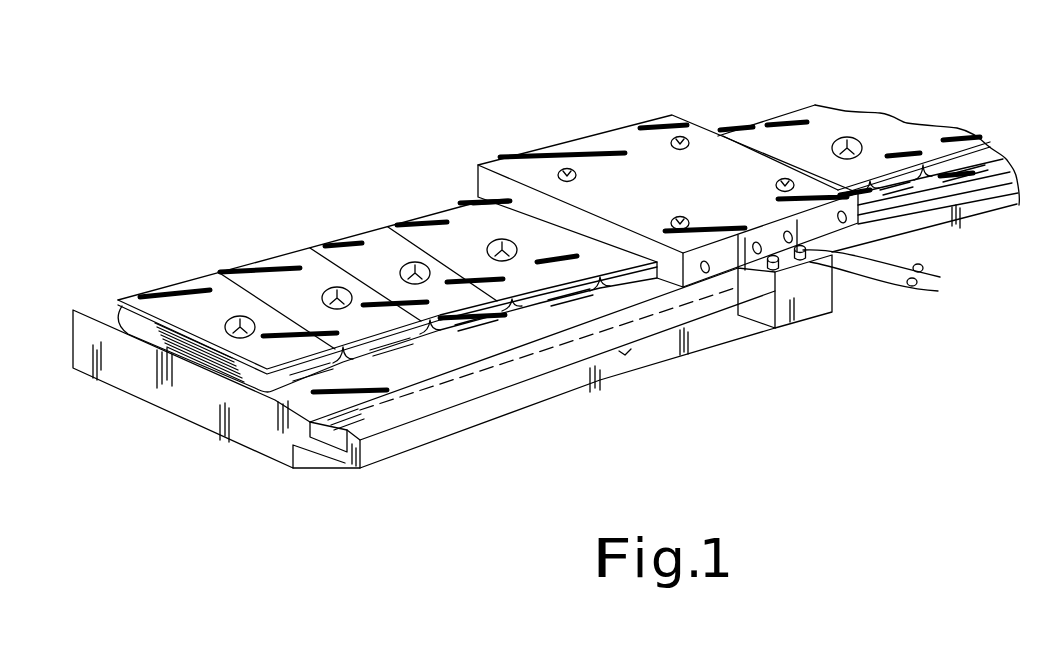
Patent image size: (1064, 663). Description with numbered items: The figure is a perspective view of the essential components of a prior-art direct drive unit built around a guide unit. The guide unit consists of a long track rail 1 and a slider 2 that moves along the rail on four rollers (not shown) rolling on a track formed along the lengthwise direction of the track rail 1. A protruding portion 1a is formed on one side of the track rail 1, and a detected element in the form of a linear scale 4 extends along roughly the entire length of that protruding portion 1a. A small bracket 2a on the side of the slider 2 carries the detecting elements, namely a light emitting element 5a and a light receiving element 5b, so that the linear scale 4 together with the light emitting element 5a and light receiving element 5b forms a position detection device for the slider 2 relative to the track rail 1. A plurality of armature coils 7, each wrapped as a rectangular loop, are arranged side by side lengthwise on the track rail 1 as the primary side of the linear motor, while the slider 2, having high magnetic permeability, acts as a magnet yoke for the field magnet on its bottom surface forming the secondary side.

The track rail 1 is at (245, 432).
The protruding portion 1a is at (625, 355).
The slider 2 is at (627, 143).
The small bracket 2a is at (782, 300).
The linear scale 4 is at (641, 302).
The light emitting element 5a is at (775, 270).
The light receiving element 5b is at (810, 258).
The armature coils 7 is at (343, 362).